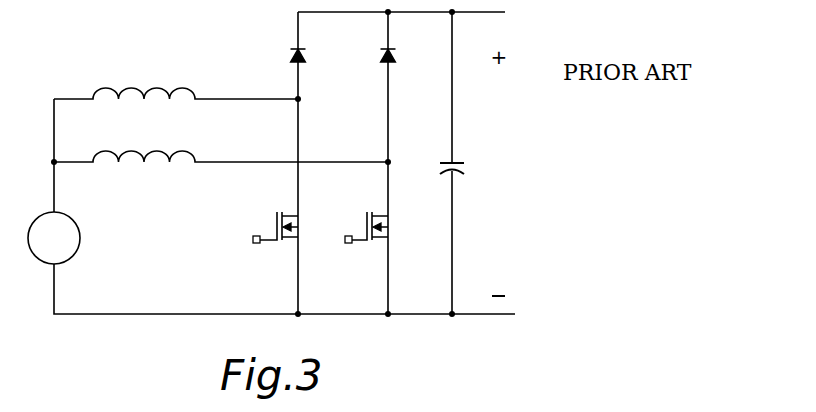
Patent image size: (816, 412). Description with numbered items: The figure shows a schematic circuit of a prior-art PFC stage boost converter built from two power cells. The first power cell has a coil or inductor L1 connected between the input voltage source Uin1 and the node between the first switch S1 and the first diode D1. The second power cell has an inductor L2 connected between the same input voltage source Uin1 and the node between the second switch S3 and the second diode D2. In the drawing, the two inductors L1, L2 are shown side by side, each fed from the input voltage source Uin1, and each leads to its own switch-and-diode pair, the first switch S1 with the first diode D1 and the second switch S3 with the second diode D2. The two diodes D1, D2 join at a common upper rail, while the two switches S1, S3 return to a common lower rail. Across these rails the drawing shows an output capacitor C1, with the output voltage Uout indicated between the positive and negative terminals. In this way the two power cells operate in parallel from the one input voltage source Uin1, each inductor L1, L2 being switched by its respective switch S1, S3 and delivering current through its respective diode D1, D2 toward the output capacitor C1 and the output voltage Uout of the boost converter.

The inductor L1 is at (176, 76).
The inductor L2 is at (221, 140).
The first diode D1 is at (313, 50).
The second diode D2 is at (403, 50).
The first switch S1 is at (288, 227).
The second switch S3 is at (379, 227).
The output capacitor C1 is at (465, 181).
The input voltage source Uin1 is at (54, 238).
The output voltage Uout is at (511, 138).